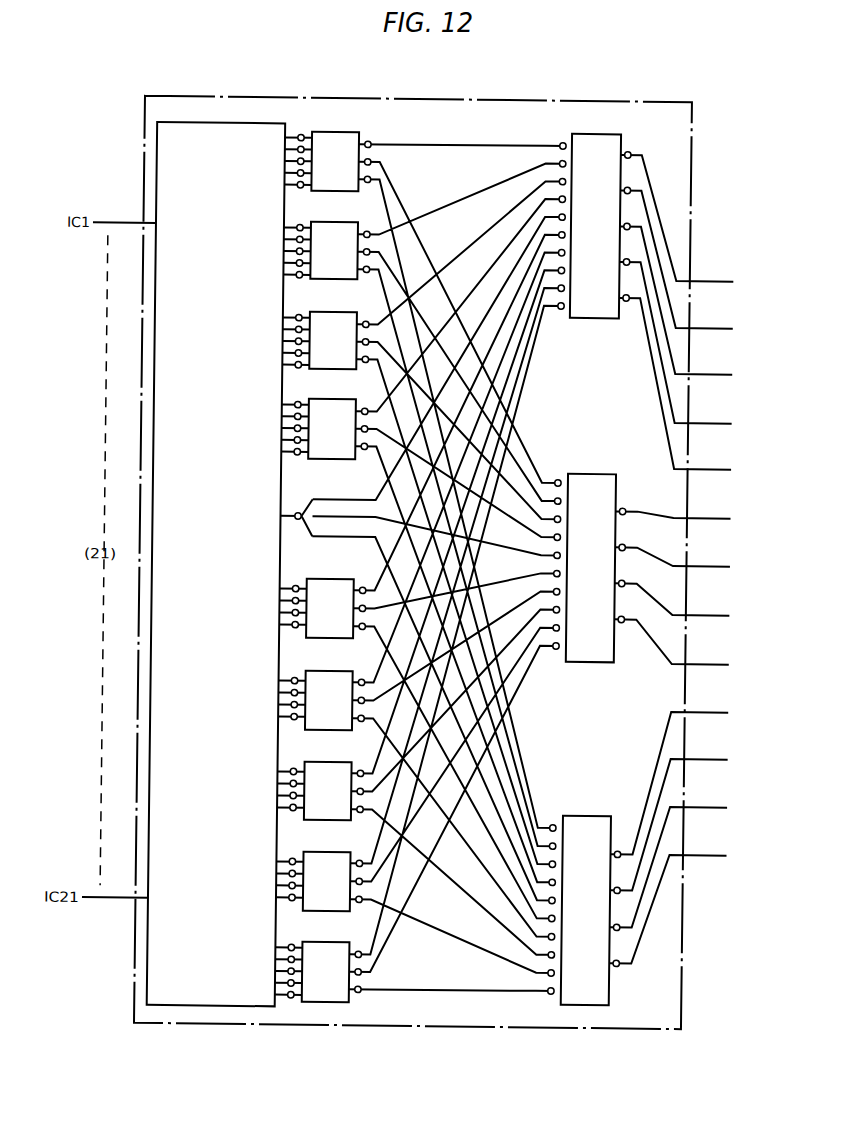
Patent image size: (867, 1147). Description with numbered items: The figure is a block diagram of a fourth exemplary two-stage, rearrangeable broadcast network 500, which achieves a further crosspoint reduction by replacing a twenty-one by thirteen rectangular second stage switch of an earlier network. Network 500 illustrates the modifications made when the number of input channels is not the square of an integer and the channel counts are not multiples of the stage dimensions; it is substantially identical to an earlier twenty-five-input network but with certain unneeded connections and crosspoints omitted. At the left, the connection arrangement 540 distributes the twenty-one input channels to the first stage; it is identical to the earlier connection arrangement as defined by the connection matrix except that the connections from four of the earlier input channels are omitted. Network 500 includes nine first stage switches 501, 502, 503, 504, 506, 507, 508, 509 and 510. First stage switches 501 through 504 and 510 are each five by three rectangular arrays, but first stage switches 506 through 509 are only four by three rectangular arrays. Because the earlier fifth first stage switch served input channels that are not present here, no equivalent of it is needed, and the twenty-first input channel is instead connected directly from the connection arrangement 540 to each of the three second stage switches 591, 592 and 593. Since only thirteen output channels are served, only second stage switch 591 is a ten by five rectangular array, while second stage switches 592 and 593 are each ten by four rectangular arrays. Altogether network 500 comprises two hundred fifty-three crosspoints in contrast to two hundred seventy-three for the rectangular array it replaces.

The two-stage rearrangeable broadcast network 500 is at (662, 94).
The connection arrangement 540 is at (244, 108).
The first stage switch 501 is at (335, 133).
The first stage switch 502 is at (335, 223).
The first stage switch 503 is at (335, 313).
The first stage switch 504 is at (335, 400).
The first stage switch 506 is at (332, 580).
The first stage switch 507 is at (331, 672).
The first stage switch 508 is at (331, 763).
The first stage switch 509 is at (331, 853).
The first stage switch 510 is at (331, 943).
The second stage switch 591 is at (594, 116).
The second stage switch 592 is at (583, 472).
The second stage switch 593 is at (580, 814).